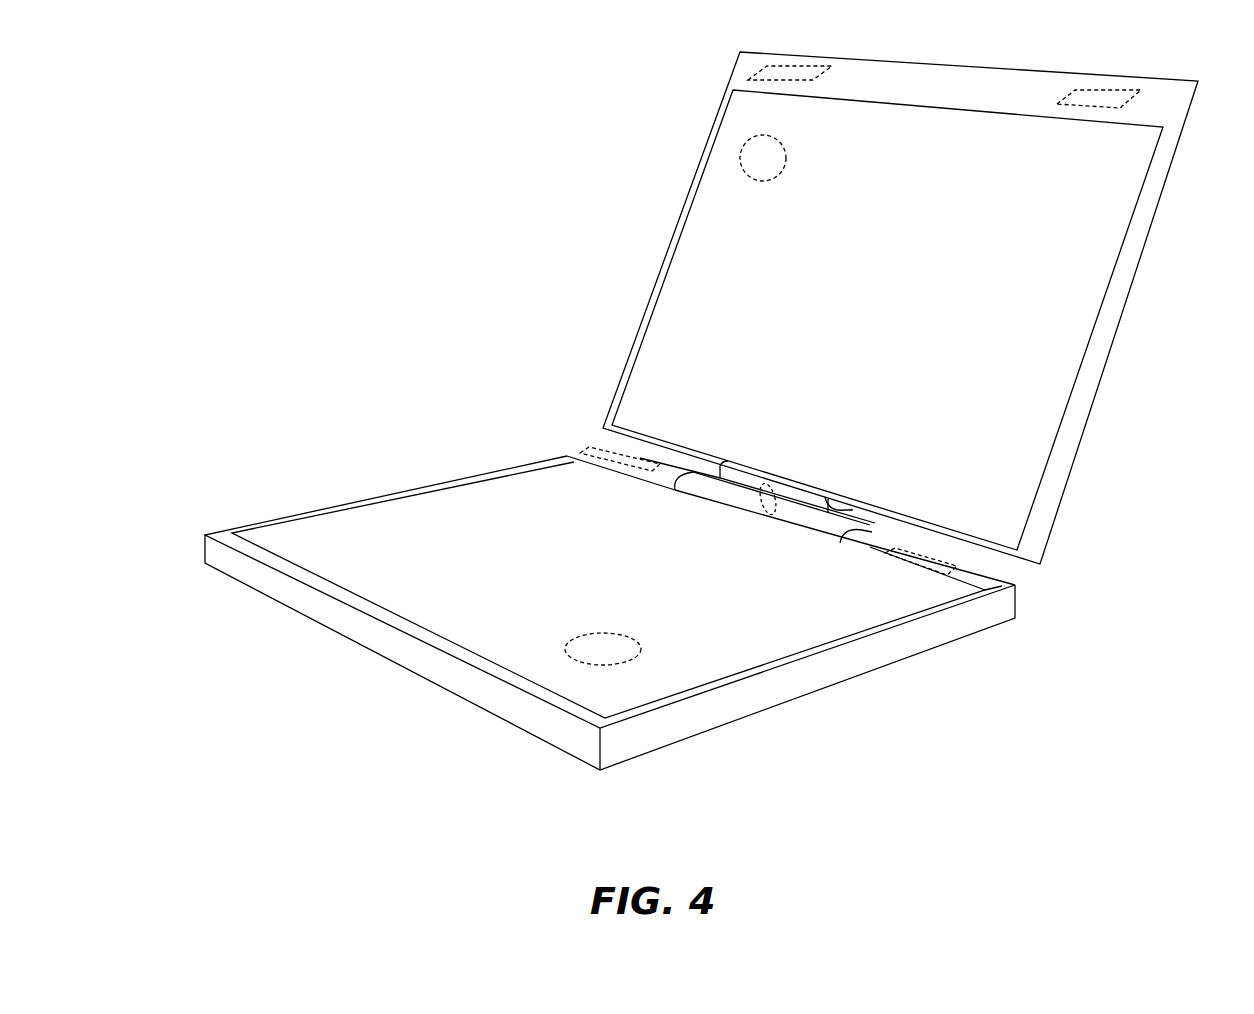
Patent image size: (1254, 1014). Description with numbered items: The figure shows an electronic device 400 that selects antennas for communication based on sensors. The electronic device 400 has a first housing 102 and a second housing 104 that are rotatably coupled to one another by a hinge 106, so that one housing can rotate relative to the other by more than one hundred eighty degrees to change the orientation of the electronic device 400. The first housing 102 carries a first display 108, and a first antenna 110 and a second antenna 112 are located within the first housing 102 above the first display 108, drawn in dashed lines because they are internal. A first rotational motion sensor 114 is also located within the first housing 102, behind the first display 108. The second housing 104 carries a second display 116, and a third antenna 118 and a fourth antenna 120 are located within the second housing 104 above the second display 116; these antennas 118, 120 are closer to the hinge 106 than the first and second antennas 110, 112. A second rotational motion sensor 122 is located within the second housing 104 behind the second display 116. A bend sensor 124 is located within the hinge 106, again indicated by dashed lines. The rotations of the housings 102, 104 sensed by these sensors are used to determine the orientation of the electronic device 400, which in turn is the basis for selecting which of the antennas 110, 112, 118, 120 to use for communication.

The electronic device 400 is at (516, 131).
The first housing 102 is at (707, 150).
The second housing 104 is at (385, 663).
The hinge 106 is at (603, 430).
The first display 108 is at (859, 320).
The first antenna 110 is at (766, 68).
The second antenna 112 is at (1100, 92).
The first rotational motion sensor 114 is at (773, 181).
The second display 116 is at (554, 548).
The third antenna 118 is at (582, 452).
The fourth antenna 120 is at (887, 557).
The second rotational motion sensor 122 is at (588, 634).
The bend sensor 124 is at (762, 498).